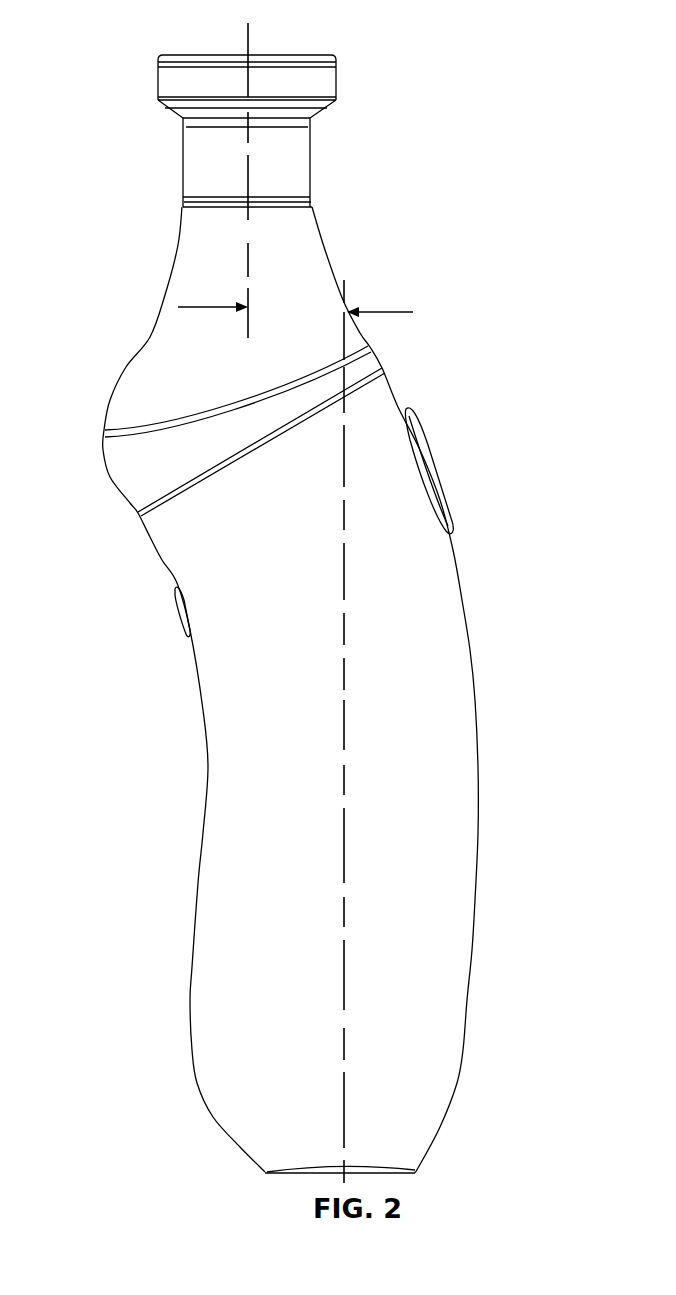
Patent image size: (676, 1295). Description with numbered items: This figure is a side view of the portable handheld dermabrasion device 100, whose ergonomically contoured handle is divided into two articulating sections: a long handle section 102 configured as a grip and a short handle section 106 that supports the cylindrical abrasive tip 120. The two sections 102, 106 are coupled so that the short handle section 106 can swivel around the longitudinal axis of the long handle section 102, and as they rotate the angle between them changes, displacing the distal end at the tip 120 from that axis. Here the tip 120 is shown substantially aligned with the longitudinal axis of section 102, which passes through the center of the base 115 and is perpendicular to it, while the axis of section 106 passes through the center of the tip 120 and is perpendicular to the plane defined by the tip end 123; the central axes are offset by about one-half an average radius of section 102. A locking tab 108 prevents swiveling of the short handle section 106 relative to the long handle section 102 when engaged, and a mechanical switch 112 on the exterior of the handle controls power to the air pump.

The portable handheld dermabrasion device 100 is at (150, 48).
The long handle section 102 is at (448, 693).
The short handle section 106 is at (150, 336).
The locking tab 108 is at (433, 462).
The mechanical switch 112 is at (180, 598).
The base 115 is at (287, 1177).
The cylindrical abrasive tip 120 is at (287, 163).
The tip end 123 is at (297, 52).